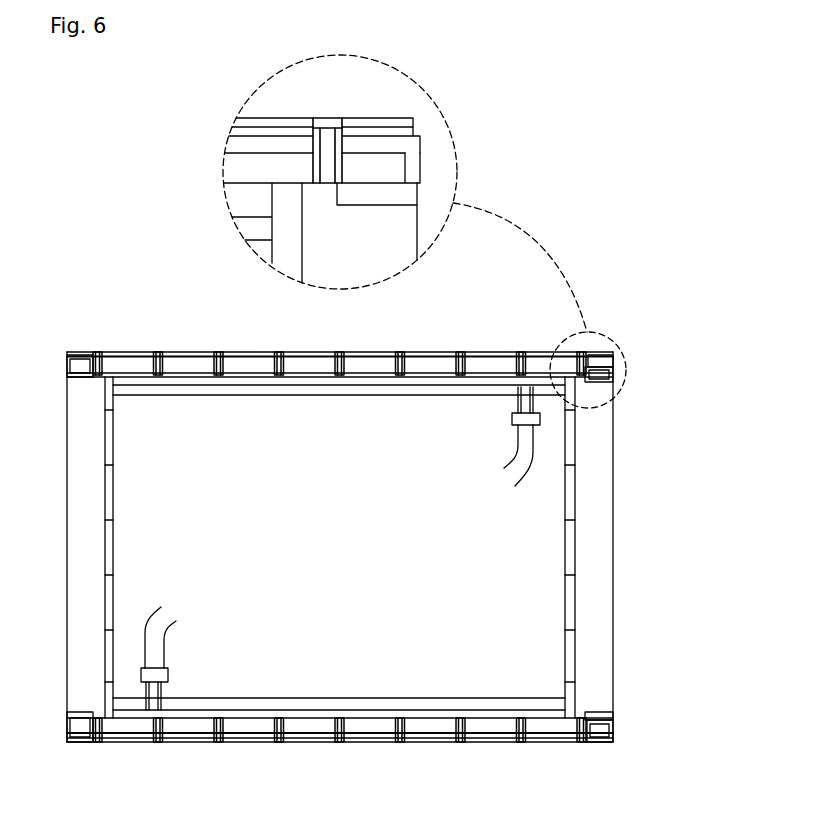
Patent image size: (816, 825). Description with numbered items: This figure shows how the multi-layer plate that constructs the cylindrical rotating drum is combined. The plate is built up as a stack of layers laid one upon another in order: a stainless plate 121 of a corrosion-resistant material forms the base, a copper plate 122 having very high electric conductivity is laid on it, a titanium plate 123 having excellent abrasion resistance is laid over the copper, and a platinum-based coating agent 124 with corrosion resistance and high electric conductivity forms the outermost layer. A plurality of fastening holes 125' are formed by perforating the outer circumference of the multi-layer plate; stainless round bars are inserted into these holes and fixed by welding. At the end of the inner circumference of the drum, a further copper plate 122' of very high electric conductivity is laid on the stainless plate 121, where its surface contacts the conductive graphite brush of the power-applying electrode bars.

The stainless plate 121 is at (392, 165).
The copper plate 122 is at (358, 146).
The copper plate 122' is at (377, 221).
The titanium plate 123 is at (413, 130).
The platinum-based coating agent 124 is at (413, 118).
The fastening hole 125' is at (339, 415).